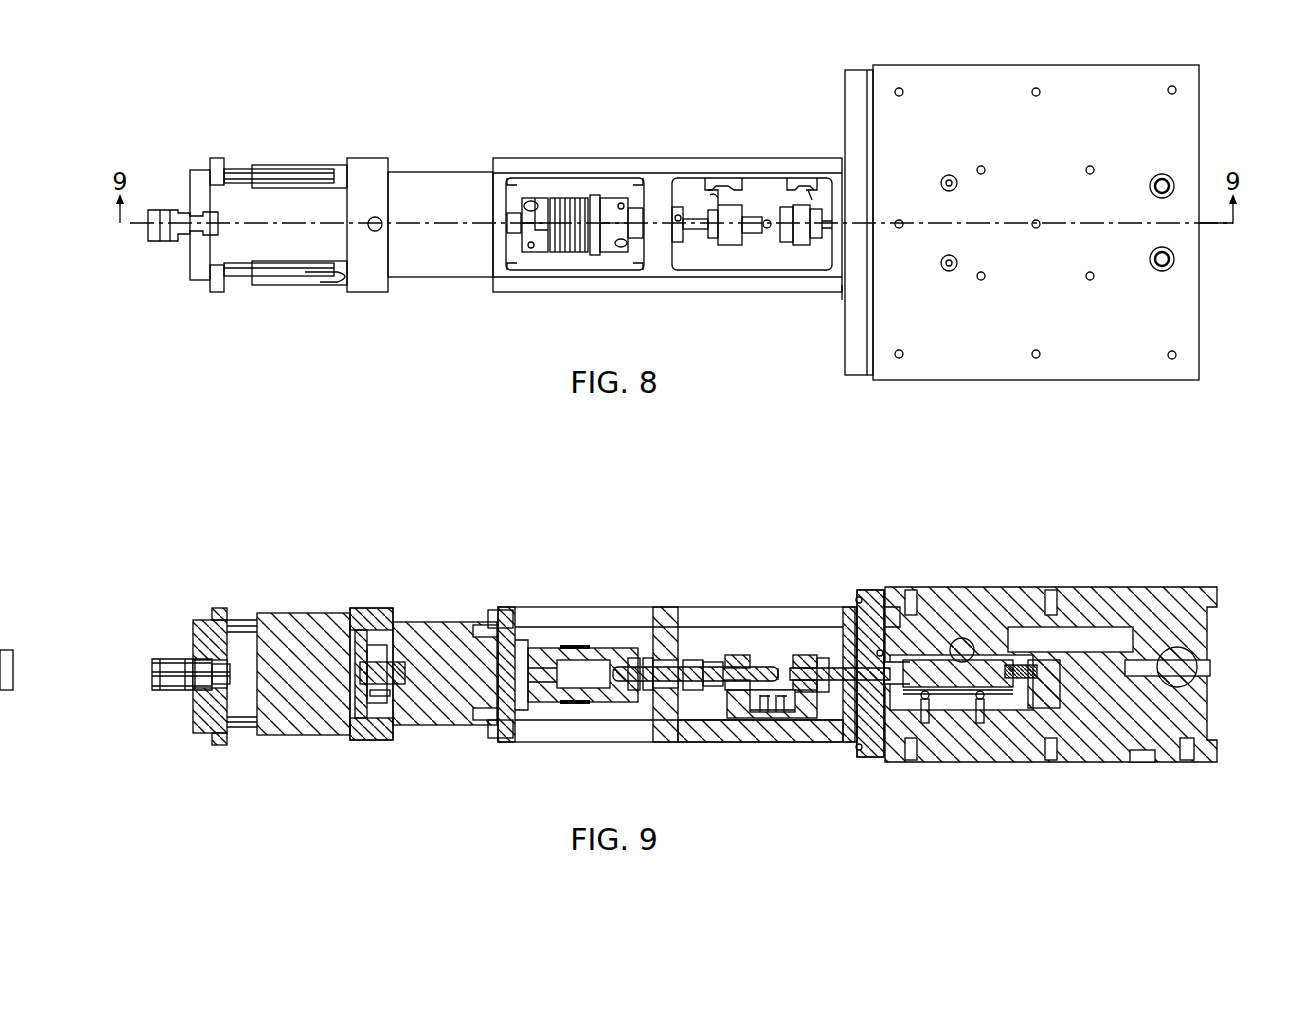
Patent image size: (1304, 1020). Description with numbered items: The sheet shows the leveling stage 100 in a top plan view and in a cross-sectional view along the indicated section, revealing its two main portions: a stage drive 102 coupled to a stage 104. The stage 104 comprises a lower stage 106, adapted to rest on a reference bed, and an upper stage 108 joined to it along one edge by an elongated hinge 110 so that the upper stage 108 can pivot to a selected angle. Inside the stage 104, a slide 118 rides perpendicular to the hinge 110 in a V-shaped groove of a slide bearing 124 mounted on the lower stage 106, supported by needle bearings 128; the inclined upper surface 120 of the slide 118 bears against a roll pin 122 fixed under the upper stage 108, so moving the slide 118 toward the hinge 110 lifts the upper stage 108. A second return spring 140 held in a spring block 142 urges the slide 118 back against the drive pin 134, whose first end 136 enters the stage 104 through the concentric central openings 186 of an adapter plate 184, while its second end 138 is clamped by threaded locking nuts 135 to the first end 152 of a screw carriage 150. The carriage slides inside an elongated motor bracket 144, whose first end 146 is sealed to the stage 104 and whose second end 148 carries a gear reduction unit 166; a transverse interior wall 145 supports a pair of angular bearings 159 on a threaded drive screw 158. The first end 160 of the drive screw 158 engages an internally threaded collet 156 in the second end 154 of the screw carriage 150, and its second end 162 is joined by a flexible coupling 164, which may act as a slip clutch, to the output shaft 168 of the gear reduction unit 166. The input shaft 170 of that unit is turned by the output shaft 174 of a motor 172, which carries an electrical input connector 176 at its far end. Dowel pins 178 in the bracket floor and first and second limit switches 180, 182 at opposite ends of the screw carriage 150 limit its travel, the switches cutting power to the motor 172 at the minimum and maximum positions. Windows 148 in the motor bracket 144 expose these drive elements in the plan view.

In FIG. 8, the leveling stage 100 is at (772, 56).
In FIG. 9, the leveling stage 100 is at (918, 492).
In FIG. 8, the stage drive 102 is at (452, 126).
In FIG. 9, the stage drive 102 is at (190, 566).
In FIG. 8, the stage 104 is at (1218, 108).
In FIG. 9, the stage 104 is at (1220, 575).
In FIG. 9, the lower stage 106 is at (1125, 762).
In FIG. 8, the upper stage 108 is at (1106, 372).
In FIG. 9, the upper stage 108 is at (1130, 587).
In FIG. 9, the hinge 110 is at (1195, 666).
In FIG. 9, the slide 118 is at (926, 650).
In FIG. 9, the upper surface 120 is at (998, 650).
In FIG. 9, the roll pin 122 is at (962, 648).
In FIG. 9, the slide bearing 124 is at (952, 690).
In FIG. 9, the needle bearings 128 is at (924, 700).
In FIG. 8, the drive pin 134 is at (820, 240).
In FIG. 9, the drive pin 134 is at (858, 700).
In FIG. 9, the threaded locking nuts 135 is at (818, 657).
In FIG. 9, the first end 136 is at (892, 608).
In FIG. 9, the second end 138 is at (775, 665).
In FIG. 9, the second return spring 140 is at (1040, 708).
In FIG. 9, the spring block 142 is at (1060, 695).
In FIG. 8, the motor bracket 144 is at (627, 162).
In FIG. 9, the motor bracket 144 is at (564, 617).
In FIG. 8, the transverse interior wall 145 is at (658, 262).
In FIG. 9, the transverse interior wall 145 is at (665, 742).
In FIG. 8, the first end 146 is at (840, 292).
In FIG. 8, the second end 148 is at (492, 283).
In FIG. 8, the screw carriage 150 is at (757, 236).
In FIG. 9, the screw carriage 150 is at (742, 706).
In FIG. 9, the first end 152 is at (802, 654).
In FIG. 9, the second end 154 is at (736, 654).
In FIG. 9, the internally threaded collet 156 is at (702, 655).
In FIG. 8, the drive screw 158 is at (693, 230).
In FIG. 9, the drive screw 158 is at (703, 682).
In FIG. 9, the angular bearings 159 is at (653, 693).
In FIG. 9, the first end 160 is at (760, 655).
In FIG. 9, the second end 162 is at (628, 648).
In FIG. 8, the flexible coupling 164 is at (560, 253).
In FIG. 9, the flexible coupling 164 is at (556, 703).
In FIG. 8, the gear reduction unit 166 is at (418, 272).
In FIG. 9, the gear reduction unit 166 is at (433, 725).
In FIG. 9, the output shaft 168 is at (520, 645).
In FIG. 9, the input shaft 170 is at (385, 740).
In FIG. 8, the motor 172 is at (289, 253).
In FIG. 9, the motor 172 is at (286, 735).
In FIG. 9, the output shaft 174 is at (348, 630).
In FIG. 8, the electrical input connector 176 is at (164, 240).
In FIG. 9, the electrical input connector 176 is at (164, 692).
In FIG. 9, the dowel pins 178 is at (722, 725).
In FIG. 8, the first limit switch 180 is at (718, 178).
In FIG. 8, the second limit switch 182 is at (800, 178).
In FIG. 8, the adapter plate 184 is at (857, 372).
In FIG. 9, the adapter plate 184 is at (870, 589).
In FIG. 9, the central openings 186 is at (875, 757).